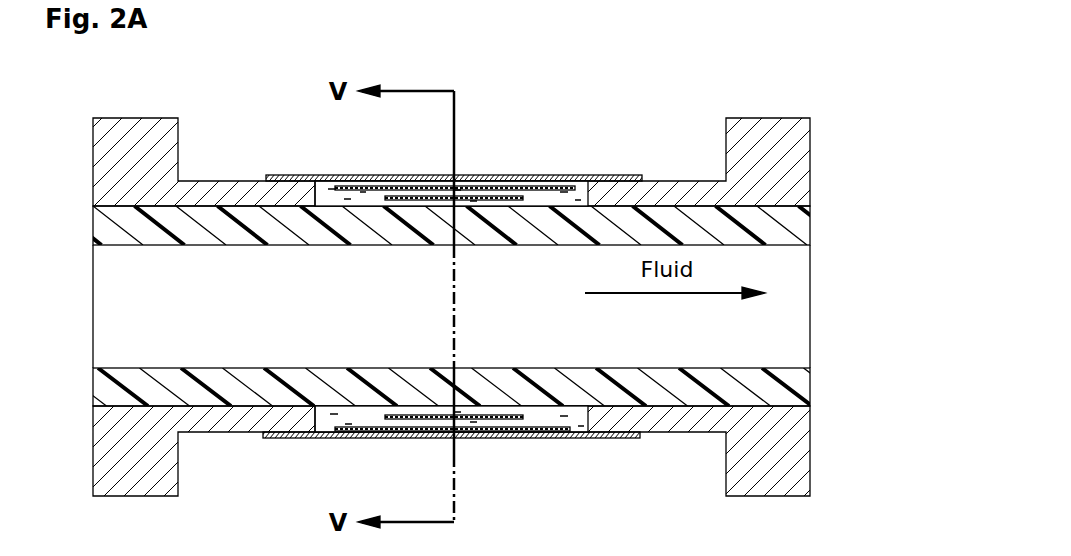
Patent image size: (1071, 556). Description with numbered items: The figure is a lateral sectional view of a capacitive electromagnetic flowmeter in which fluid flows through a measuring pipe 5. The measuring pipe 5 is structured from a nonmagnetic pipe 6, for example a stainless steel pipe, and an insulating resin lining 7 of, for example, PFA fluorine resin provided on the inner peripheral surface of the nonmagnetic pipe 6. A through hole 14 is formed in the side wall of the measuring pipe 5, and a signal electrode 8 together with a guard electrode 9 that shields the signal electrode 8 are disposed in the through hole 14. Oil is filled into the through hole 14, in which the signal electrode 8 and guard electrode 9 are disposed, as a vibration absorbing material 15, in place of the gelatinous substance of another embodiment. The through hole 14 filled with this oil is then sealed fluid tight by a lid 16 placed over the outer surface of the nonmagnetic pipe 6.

The measuring pipe 5 is at (484, 307).
The nonmagnetic pipe 6 is at (800, 167).
The insulating resin lining 7 is at (788, 233).
The signal electrode 8 is at (420, 200).
The guard electrode 9 is at (538, 186).
The through hole 14 is at (590, 186).
The vibration absorbing material 15 is at (318, 181).
The lid 16 is at (386, 175).